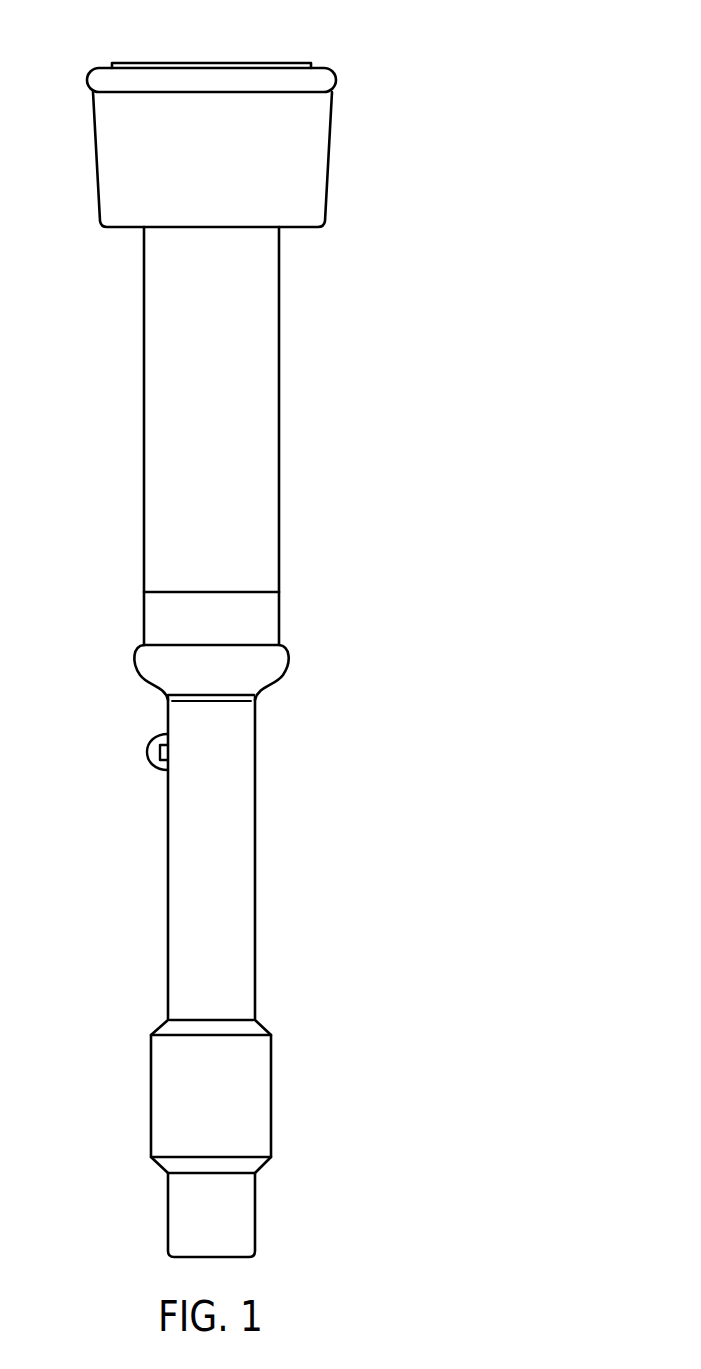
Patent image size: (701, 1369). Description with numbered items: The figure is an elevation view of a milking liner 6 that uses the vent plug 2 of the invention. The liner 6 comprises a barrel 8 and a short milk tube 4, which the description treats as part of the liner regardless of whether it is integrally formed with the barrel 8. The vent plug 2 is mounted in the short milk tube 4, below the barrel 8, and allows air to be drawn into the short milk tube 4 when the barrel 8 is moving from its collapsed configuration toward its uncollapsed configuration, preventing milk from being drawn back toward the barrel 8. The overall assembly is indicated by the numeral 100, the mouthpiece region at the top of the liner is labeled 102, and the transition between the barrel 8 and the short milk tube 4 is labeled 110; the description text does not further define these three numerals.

The syringe device 100 is at (298, 629).
The plunger cap 102 is at (275, 145).
The milking liner 6 is at (273, 436).
The barrel 8 is at (255, 428).
The collar 110 is at (272, 689).
The vent plug 2 is at (107, 753).
The short milk tube 4 is at (173, 834).